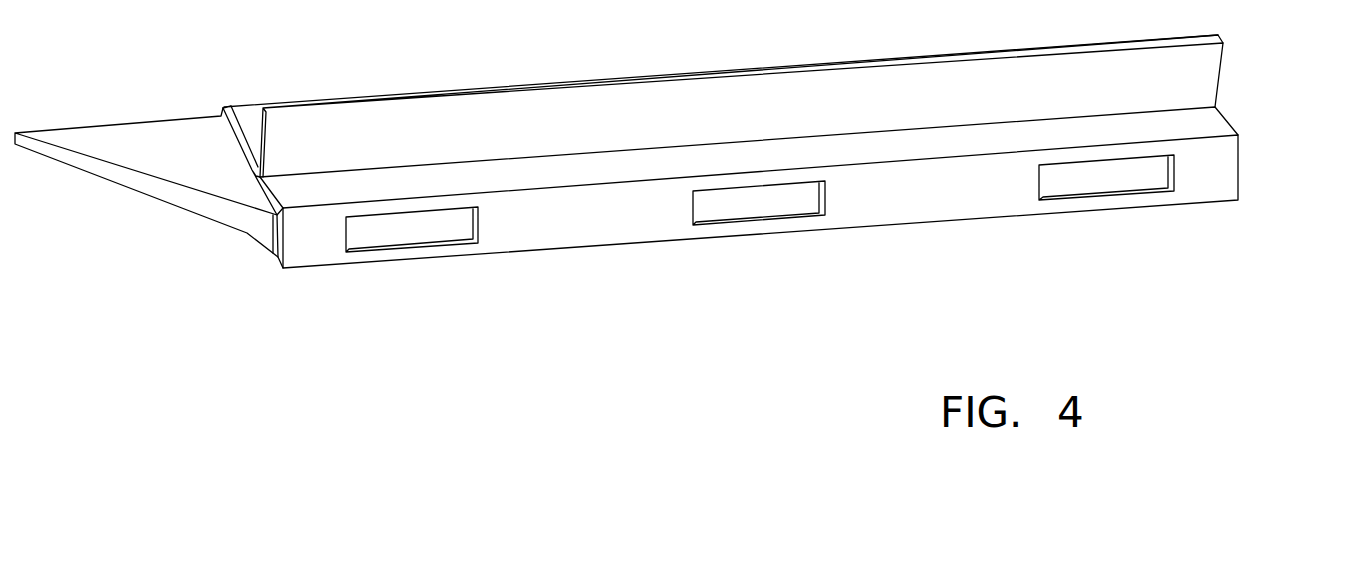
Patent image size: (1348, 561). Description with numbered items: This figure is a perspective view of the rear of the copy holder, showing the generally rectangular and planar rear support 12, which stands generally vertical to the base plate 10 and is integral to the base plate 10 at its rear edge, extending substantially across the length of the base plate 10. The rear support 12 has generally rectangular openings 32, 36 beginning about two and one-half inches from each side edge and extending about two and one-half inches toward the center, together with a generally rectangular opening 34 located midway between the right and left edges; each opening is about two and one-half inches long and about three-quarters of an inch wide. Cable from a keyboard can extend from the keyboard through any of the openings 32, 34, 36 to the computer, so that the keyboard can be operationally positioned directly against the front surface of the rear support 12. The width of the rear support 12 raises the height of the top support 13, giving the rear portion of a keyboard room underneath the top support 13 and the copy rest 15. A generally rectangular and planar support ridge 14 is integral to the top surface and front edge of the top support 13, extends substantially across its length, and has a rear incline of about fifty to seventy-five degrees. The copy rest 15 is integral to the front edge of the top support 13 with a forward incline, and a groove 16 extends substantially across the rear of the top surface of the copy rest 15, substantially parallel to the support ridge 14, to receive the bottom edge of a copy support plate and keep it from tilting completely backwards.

The base plate 10 is at (123, 147).
The rear support 12 is at (563, 233).
The top support 13 is at (1215, 127).
The support ridge 14 is at (1198, 68).
The copy rest 15 is at (247, 117).
The groove 16 is at (257, 170).
The opening 32 is at (392, 247).
The opening 34 is at (738, 222).
The opening 36 is at (1080, 195).